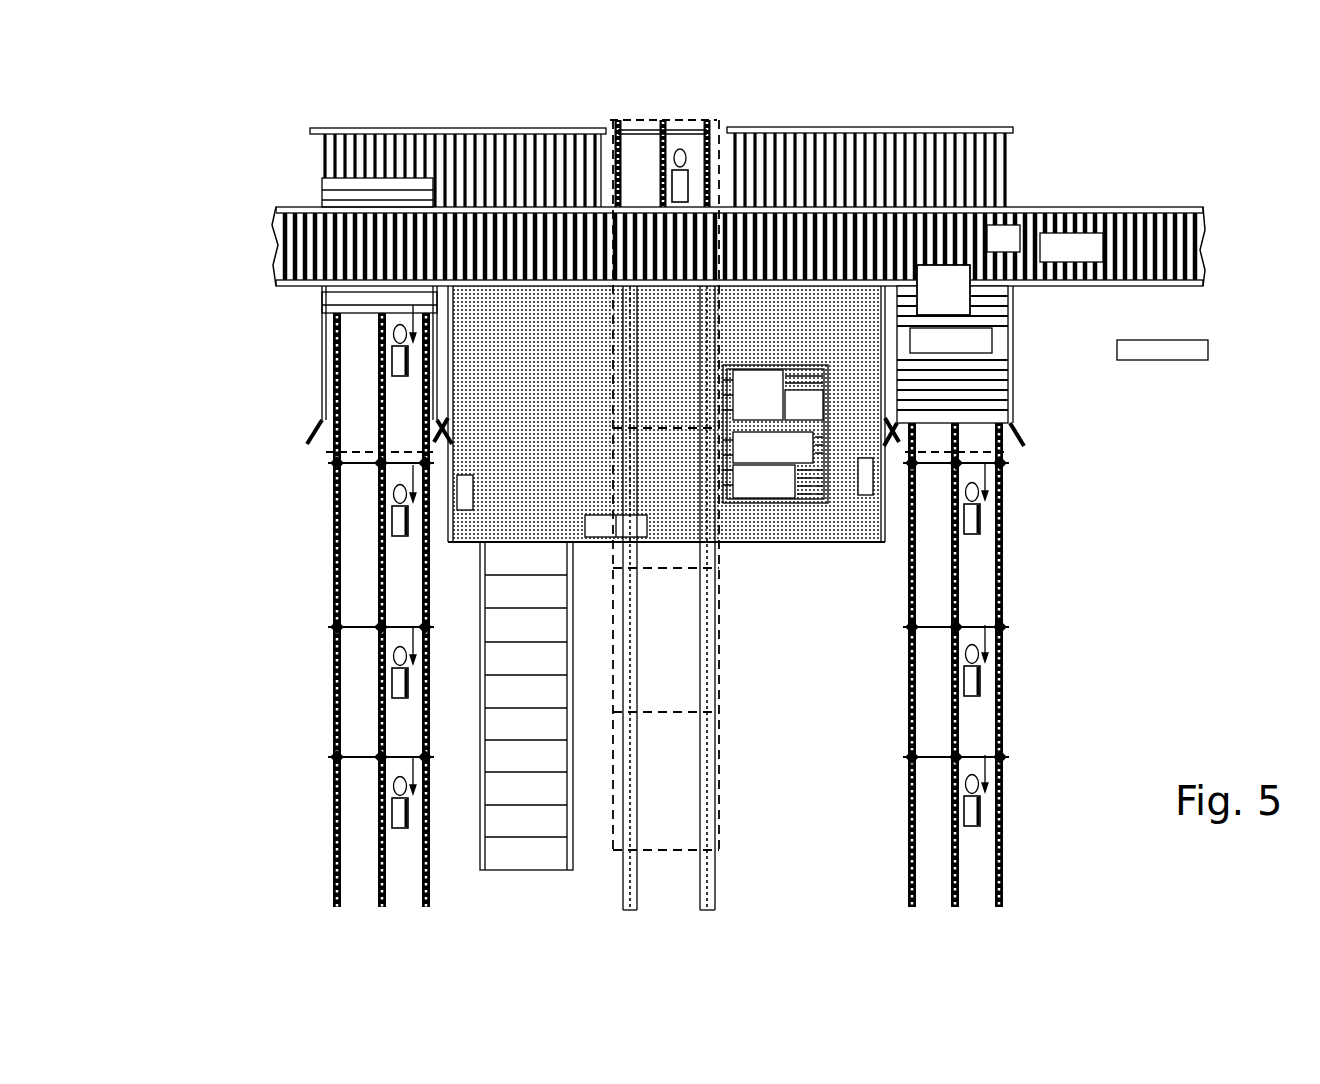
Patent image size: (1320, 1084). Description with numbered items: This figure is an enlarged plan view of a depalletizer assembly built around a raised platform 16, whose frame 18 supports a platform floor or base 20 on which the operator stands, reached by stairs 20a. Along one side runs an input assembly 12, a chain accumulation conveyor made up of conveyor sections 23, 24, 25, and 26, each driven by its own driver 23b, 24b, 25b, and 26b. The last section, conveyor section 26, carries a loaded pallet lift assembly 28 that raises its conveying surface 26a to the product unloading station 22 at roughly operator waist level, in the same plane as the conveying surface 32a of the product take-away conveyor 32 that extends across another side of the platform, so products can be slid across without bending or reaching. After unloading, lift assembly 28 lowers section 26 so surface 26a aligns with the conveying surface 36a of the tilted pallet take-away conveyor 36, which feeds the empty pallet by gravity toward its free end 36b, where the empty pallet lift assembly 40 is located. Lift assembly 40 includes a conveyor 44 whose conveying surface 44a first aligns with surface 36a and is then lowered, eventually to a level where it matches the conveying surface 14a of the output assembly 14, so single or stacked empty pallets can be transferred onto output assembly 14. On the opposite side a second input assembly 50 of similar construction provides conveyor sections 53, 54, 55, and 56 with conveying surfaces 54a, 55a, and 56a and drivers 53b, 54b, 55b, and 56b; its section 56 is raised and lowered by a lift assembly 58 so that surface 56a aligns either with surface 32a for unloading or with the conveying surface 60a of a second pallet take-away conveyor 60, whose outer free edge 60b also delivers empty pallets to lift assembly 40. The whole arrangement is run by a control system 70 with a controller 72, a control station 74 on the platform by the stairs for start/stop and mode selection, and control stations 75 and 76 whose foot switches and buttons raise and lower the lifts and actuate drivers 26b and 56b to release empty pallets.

The input assembly 12 is at (256, 628).
The output assembly 14 is at (701, 515).
The conveying surface of output assembly 14a is at (688, 675).
The raised platform 16 is at (789, 566).
The frame 18 is at (820, 545).
The platform floor or base 20 is at (666, 485).
The stairs 20a is at (540, 870).
The product unloading station 22 is at (455, 388).
The conveyor section 23 is at (335, 834).
The driver 23b is at (412, 822).
The conveyor section 24 is at (337, 722).
The driver 24b is at (393, 688).
The conveyor section 25 is at (337, 512).
The driver 25b is at (392, 528).
The conveyor section 26 is at (335, 601).
The conveying surface 26a is at (357, 362).
The driver 26b is at (392, 380).
The loaded pallet lift assembly 28 is at (325, 453).
The product take-away conveyor 32 is at (748, 238).
The conveying surface of product take-away conveyor 32a is at (1155, 287).
The pallet take-away conveyor 36 is at (467, 129).
The conveying surface of pallet take-away conveyor 36a is at (427, 172).
The free end of pallet take-away conveyor 36b is at (603, 152).
The empty pallet lift assembly 40 is at (703, 129).
The conveyor of lift assembly 44 is at (604, 190).
The conveying surface of lift conveyor 44a is at (620, 188).
The second input assembly 50 is at (965, 586).
The conveyor section 53 is at (881, 800).
The driver 53b is at (982, 814).
The conveyor section 54 is at (879, 720).
The conveying surface 54a is at (907, 664).
The driver 54b is at (982, 686).
The conveyor section 55 is at (1005, 556).
The conveying surface 55a is at (1003, 594).
The driver 55b is at (984, 522).
The conveyor section 56 is at (1000, 344).
The conveying surface 56a is at (1012, 400).
The driver 56b is at (1010, 345).
The lift assembly 58 is at (1007, 442).
The second pallet take-away conveyor 60 is at (881, 129).
The conveying surface of second pallet take-away conveyor 60a is at (832, 132).
The outer free edge of second pallet take-away conveyor 60b is at (748, 142).
The control system 70 is at (1192, 383).
The controller 72 is at (1160, 360).
The control station 74 is at (613, 515).
The control station 75 is at (476, 488).
The control station 76 is at (862, 472).